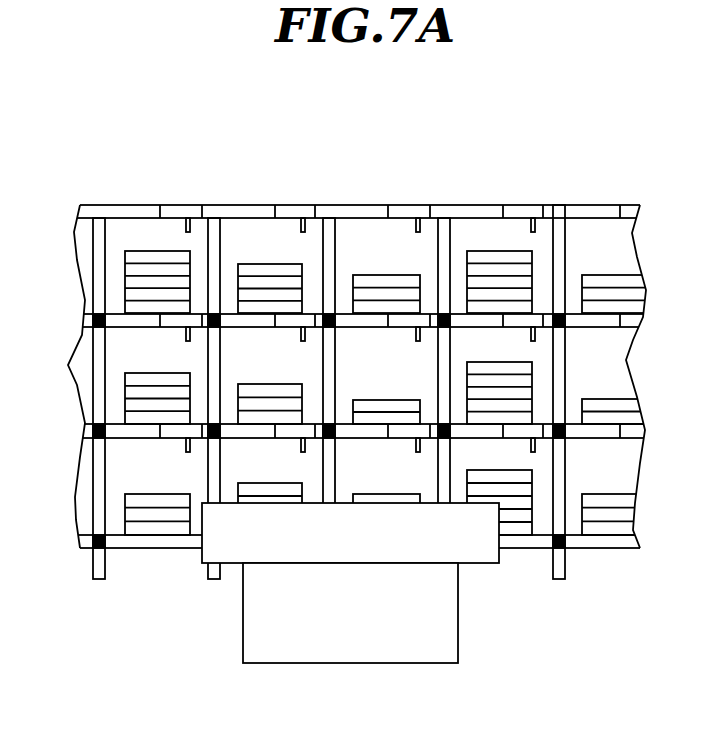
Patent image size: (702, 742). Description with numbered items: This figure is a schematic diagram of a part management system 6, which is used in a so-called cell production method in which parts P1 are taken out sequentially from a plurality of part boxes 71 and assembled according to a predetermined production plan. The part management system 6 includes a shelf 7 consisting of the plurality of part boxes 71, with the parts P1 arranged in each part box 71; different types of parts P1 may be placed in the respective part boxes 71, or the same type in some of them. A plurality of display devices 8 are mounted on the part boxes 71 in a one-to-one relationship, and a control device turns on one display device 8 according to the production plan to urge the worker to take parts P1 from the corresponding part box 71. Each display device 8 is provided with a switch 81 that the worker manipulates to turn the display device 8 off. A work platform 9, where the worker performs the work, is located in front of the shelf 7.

The shelf 7 is at (451, 197).
The part box 71 is at (132, 230).
The display device 8 is at (173, 210).
The switch 81 is at (190, 218).
The part P1 is at (125, 283).
The part management system 6 is at (589, 607).
The work platform 9 is at (257, 620).